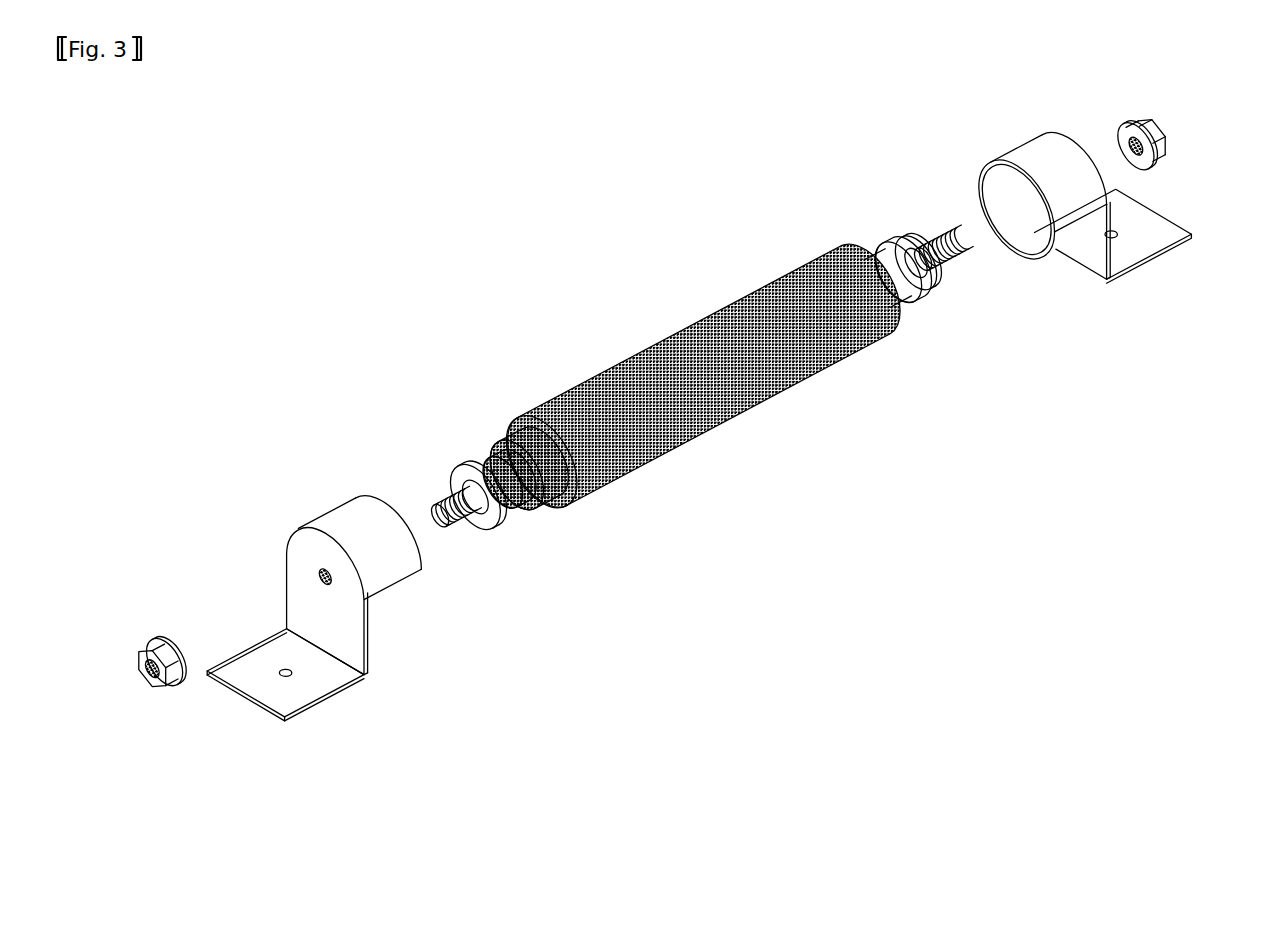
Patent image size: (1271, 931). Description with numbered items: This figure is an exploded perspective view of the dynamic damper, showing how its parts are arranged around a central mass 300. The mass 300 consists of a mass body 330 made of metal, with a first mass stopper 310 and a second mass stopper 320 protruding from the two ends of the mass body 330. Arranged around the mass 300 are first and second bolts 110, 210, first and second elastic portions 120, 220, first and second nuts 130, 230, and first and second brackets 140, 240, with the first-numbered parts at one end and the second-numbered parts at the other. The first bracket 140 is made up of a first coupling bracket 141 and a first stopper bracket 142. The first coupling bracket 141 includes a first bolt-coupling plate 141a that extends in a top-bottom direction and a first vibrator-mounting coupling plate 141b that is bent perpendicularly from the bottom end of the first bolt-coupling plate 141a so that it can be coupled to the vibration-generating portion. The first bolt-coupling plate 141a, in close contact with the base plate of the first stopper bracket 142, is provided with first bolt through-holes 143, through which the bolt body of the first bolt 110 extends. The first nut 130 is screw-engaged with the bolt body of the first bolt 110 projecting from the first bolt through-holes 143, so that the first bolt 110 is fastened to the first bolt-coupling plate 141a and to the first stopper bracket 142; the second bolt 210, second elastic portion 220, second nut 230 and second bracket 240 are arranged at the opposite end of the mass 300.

The first bolt 110 is at (435, 497).
The first elastic portion 120 is at (485, 453).
The first nut 130 is at (153, 647).
The first bracket 140 is at (333, 623).
The first coupling bracket 141 is at (322, 685).
The first bolt-coupling plate 141a is at (348, 627).
The first vibrator-mounting coupling plate 141b is at (285, 709).
The first stopper bracket 142 is at (390, 583).
The first bolt through-holes 143 is at (320, 580).
The second bolt 210 is at (943, 230).
The second elastic portion 220 is at (910, 257).
The second nut 230 is at (1170, 140).
The second bracket 240 is at (1062, 259).
The mass 300 is at (717, 419).
The first mass stopper 310 is at (557, 510).
The second mass stopper 320 is at (910, 292).
The mass body 330 is at (712, 393).